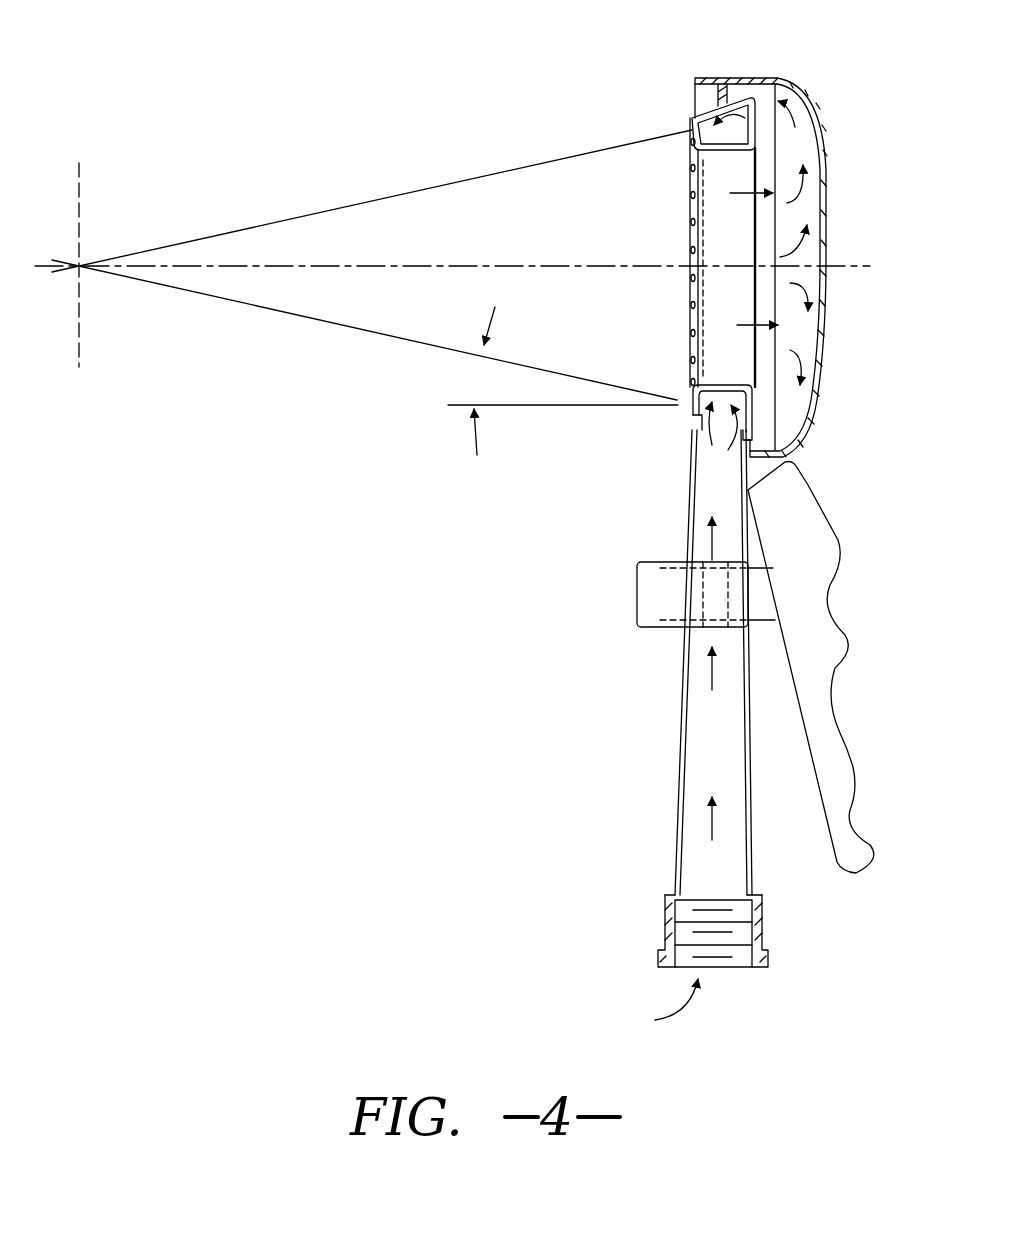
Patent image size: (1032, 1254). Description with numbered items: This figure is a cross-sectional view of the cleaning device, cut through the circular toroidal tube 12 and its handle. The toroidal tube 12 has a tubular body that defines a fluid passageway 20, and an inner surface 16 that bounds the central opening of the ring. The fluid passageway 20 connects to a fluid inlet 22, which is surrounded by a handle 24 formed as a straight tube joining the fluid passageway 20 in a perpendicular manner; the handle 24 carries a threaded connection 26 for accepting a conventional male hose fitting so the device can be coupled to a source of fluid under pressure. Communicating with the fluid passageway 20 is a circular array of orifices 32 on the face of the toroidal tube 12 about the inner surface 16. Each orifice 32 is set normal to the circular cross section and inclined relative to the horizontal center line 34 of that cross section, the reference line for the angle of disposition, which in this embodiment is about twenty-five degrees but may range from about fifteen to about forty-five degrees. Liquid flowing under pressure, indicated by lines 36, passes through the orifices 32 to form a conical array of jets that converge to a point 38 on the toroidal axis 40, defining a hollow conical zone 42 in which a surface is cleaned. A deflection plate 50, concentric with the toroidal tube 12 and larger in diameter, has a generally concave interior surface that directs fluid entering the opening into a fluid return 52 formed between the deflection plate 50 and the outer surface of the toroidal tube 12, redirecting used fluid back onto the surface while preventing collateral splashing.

The toroidal tube 12 is at (715, 177).
The inner surface 16 is at (747, 168).
The fluid passageway 20 is at (729, 100).
The fluid inlet 22 is at (653, 1007).
The handle 24 is at (678, 790).
The threaded connection 26 is at (763, 928).
The orifices 32 is at (690, 225).
The horizontal center line 34 is at (563, 384).
The lines 36 is at (313, 212).
The point 38 is at (80, 266).
The toroidal axis 40 is at (478, 265).
The hollow conical zone 42 is at (493, 188).
The deflection plate 50 is at (813, 118).
The fluid return 52 is at (698, 97).